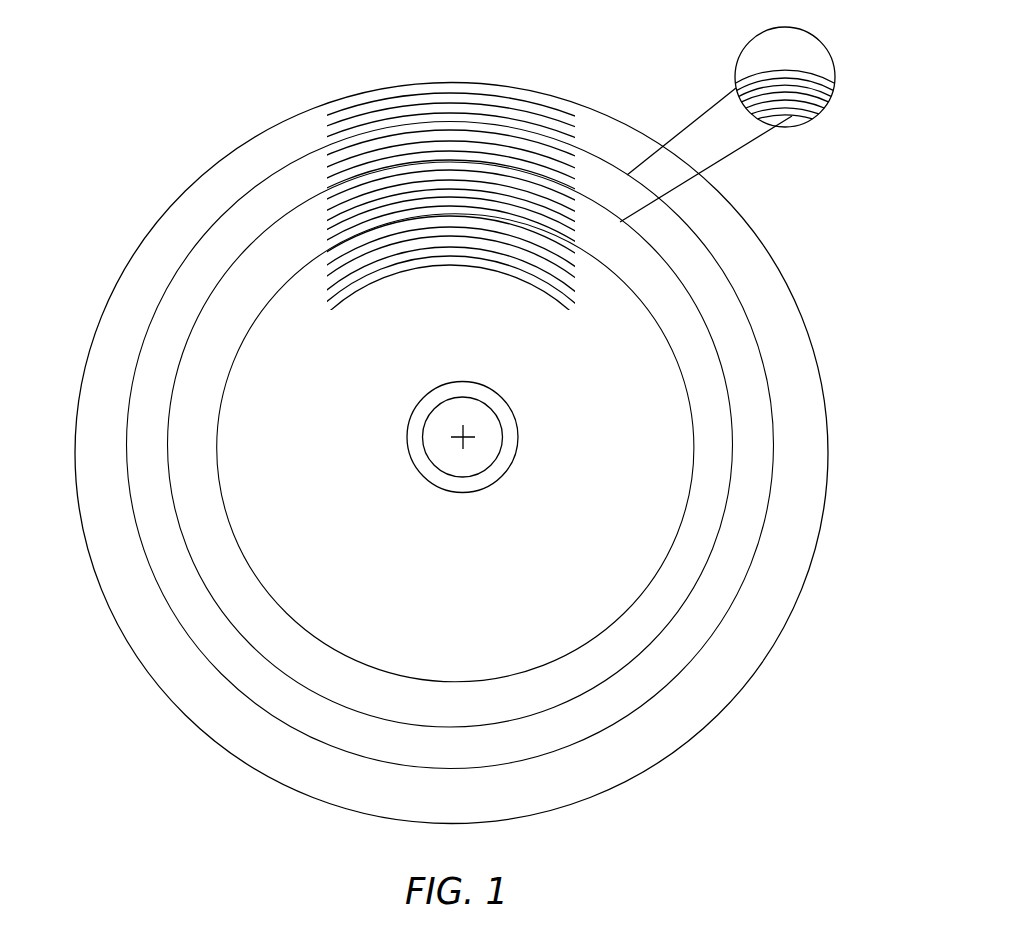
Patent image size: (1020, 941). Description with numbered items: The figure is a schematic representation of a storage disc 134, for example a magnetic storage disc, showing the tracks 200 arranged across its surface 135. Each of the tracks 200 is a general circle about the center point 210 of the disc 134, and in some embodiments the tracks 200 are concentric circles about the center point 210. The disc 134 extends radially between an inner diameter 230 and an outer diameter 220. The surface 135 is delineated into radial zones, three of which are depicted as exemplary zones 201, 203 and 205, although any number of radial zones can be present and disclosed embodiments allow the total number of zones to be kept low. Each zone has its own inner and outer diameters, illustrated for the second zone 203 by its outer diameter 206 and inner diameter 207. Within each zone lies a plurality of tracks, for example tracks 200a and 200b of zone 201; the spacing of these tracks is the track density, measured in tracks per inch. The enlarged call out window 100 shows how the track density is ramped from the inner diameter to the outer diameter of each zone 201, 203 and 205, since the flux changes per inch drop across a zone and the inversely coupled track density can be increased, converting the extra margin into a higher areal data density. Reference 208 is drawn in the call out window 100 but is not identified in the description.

The call out window 100 is at (741, 104).
The disc 134 is at (625, 783).
The surface 135 is at (330, 772).
The tracks 200 is at (305, 116).
The track 200a is at (565, 120).
The track 200b is at (578, 147).
The zone 201 is at (139, 331).
The second zone 203 is at (177, 386).
The zone 205 is at (209, 433).
The outer diameter 206 is at (130, 507).
The inner diameter 207 is at (797, 98).
The groove ridge 208 is at (763, 70).
The center point 210 is at (452, 437).
The outer diameter 220 is at (760, 660).
The inner diameter 230 is at (497, 421).